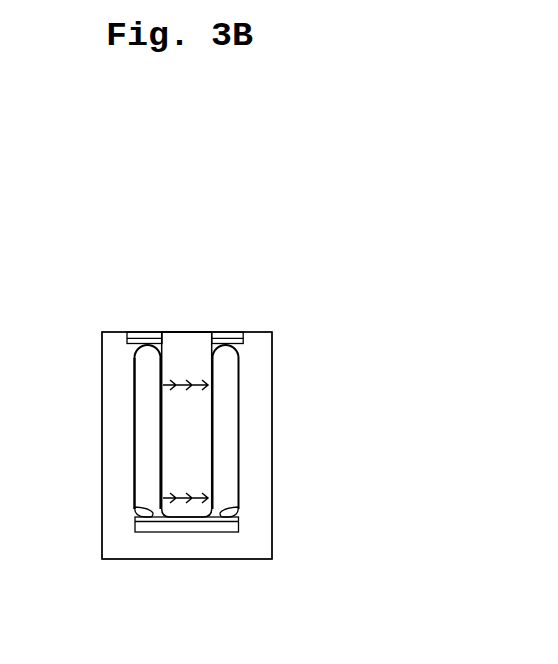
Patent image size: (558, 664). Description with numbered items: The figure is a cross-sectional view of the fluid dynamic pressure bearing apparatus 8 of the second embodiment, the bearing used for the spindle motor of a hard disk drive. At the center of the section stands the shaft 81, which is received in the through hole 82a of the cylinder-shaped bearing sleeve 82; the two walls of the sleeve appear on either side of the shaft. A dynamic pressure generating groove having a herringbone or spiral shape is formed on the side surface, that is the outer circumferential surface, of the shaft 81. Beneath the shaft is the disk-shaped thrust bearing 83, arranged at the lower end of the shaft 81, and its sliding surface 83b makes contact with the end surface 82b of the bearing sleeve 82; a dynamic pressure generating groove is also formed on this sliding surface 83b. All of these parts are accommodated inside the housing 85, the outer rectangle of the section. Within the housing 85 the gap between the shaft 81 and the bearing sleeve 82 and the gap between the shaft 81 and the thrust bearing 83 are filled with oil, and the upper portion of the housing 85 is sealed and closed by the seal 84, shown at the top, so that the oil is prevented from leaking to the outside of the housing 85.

The fluid dynamic pressure bearing apparatus 8 is at (100, 200).
The shaft 81 is at (192, 352).
The bearing sleeve 82 is at (147, 453).
The through hole 82a is at (158, 417).
The end surface 82b is at (135, 507).
The thrust bearing 83 is at (215, 532).
The sliding surface 83b is at (161, 521).
The seal 84 is at (222, 343).
The housing 85 is at (258, 428).